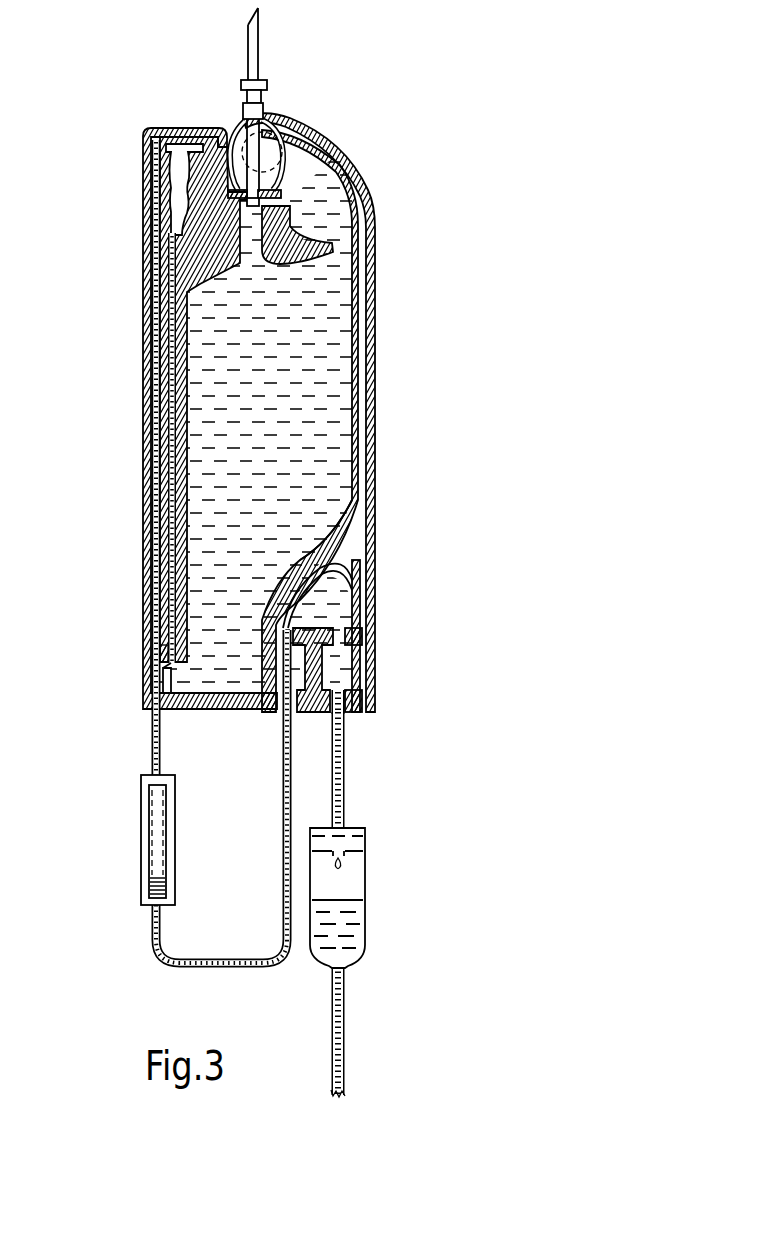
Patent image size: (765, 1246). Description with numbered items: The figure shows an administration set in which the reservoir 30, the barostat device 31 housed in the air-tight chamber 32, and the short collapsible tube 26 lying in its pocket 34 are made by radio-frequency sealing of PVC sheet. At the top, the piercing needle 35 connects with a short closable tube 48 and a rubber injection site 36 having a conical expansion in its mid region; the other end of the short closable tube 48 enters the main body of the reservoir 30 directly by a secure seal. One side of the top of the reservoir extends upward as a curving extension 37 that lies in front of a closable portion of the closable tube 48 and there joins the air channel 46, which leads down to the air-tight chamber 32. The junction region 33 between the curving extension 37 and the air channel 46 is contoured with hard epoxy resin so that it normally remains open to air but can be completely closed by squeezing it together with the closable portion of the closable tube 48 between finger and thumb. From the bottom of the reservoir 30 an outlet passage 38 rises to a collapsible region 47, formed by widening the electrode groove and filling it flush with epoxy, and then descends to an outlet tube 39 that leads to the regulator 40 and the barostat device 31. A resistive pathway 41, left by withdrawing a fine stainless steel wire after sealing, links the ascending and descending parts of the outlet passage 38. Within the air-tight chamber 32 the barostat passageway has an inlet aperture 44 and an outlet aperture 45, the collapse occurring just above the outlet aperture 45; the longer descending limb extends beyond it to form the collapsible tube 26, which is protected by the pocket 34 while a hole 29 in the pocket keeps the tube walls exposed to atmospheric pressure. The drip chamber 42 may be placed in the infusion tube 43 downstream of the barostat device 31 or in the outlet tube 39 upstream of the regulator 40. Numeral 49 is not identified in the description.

The collapsible tube 26 is at (340, 660).
The hole 29 is at (343, 712).
The reservoir 30 is at (290, 395).
The barostat device 31 is at (338, 592).
The air-tight chamber 32 is at (342, 538).
The junction region 33 is at (282, 125).
The pocket 34 is at (362, 684).
The piercing needle 35 is at (262, 53).
The injection site 36 is at (233, 160).
The curving extension of the reservoir 37 is at (265, 138).
The outlet passage 38 is at (158, 423).
The outlet tube 39 is at (152, 748).
The regulator 40 is at (141, 832).
The resistive pathway 41 is at (163, 665).
The drip chamber 42 is at (347, 880).
The infusion tube 43 is at (345, 776).
The inlet aperture 44 is at (346, 675).
The outlet aperture 45 is at (345, 627).
The air channel 46 is at (365, 305).
The collapsible region 47 is at (180, 173).
The short closable tube 48 is at (248, 112).
The duct end 49 is at (168, 655).